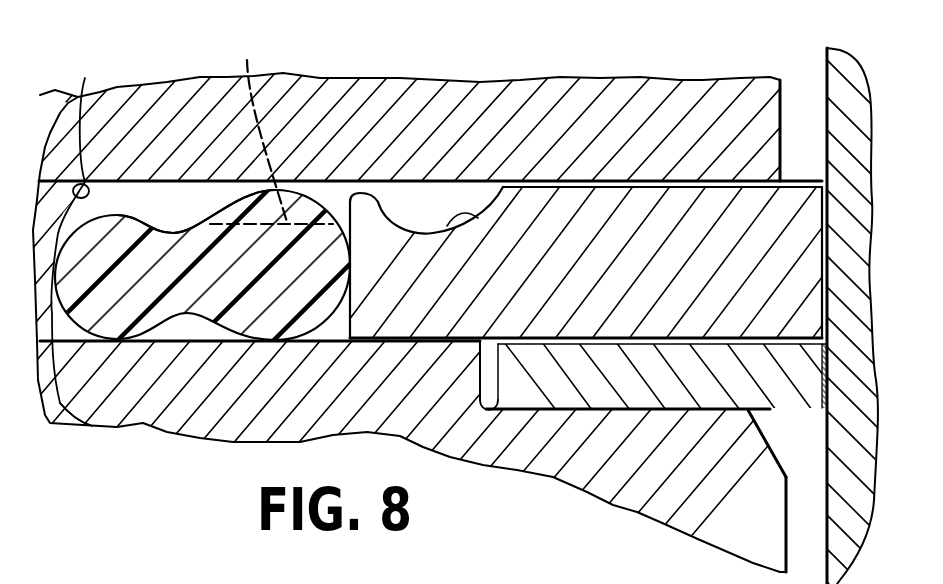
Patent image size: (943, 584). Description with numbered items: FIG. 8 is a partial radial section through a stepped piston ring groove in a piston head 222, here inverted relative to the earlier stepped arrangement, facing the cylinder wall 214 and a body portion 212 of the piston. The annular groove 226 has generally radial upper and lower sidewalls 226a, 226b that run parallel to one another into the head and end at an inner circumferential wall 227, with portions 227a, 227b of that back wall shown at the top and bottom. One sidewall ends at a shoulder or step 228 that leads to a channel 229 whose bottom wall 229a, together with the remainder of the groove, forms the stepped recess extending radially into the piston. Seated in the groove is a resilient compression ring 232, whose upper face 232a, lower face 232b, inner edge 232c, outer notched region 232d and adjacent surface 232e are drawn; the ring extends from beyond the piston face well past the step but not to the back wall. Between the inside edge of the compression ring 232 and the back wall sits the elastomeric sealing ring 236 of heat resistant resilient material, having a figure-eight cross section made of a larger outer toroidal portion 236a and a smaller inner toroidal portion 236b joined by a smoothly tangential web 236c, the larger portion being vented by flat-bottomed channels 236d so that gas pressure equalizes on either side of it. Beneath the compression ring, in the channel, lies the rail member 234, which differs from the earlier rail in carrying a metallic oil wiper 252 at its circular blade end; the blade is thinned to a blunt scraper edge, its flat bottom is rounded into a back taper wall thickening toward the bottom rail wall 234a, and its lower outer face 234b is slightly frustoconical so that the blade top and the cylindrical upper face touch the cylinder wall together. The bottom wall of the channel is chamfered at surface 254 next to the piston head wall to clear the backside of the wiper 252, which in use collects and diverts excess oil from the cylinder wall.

The housing member 212 is at (719, 127).
The wall 214 is at (830, 100).
The body 222 is at (603, 100).
The gap 226 is at (370, 195).
The recess 226a is at (452, 196).
The lower surface 226b is at (353, 372).
The spring wire 227 is at (38, 385).
The upper end of spring wire 227a is at (110, 126).
The lower end of spring wire 227b is at (90, 426).
The corner 228 is at (498, 406).
The slot 229 is at (478, 374).
The channel bottom wall 229a is at (490, 404).
The compression ring 232 is at (593, 277).
The upper surface of plate 232a is at (593, 190).
The lower surface of plate 232b is at (517, 337).
The side edge of plate 232c is at (352, 303).
The notch in plate 232d is at (397, 200).
The projection 232e is at (466, 224).
The rail member 234 is at (678, 380).
The bottom rail wall 234a is at (782, 376).
The lower surface of lower plate 234b is at (604, 390).
The sealing ring 236 is at (271, 287).
The cam lobe 236a is at (267, 323).
The cam lobe 236b is at (110, 297).
The cam neck 236c is at (173, 233).
The cam alternate position 236d is at (271, 130).
The oil wiper 252 is at (825, 468).
The chamfered surface 254 is at (770, 437).